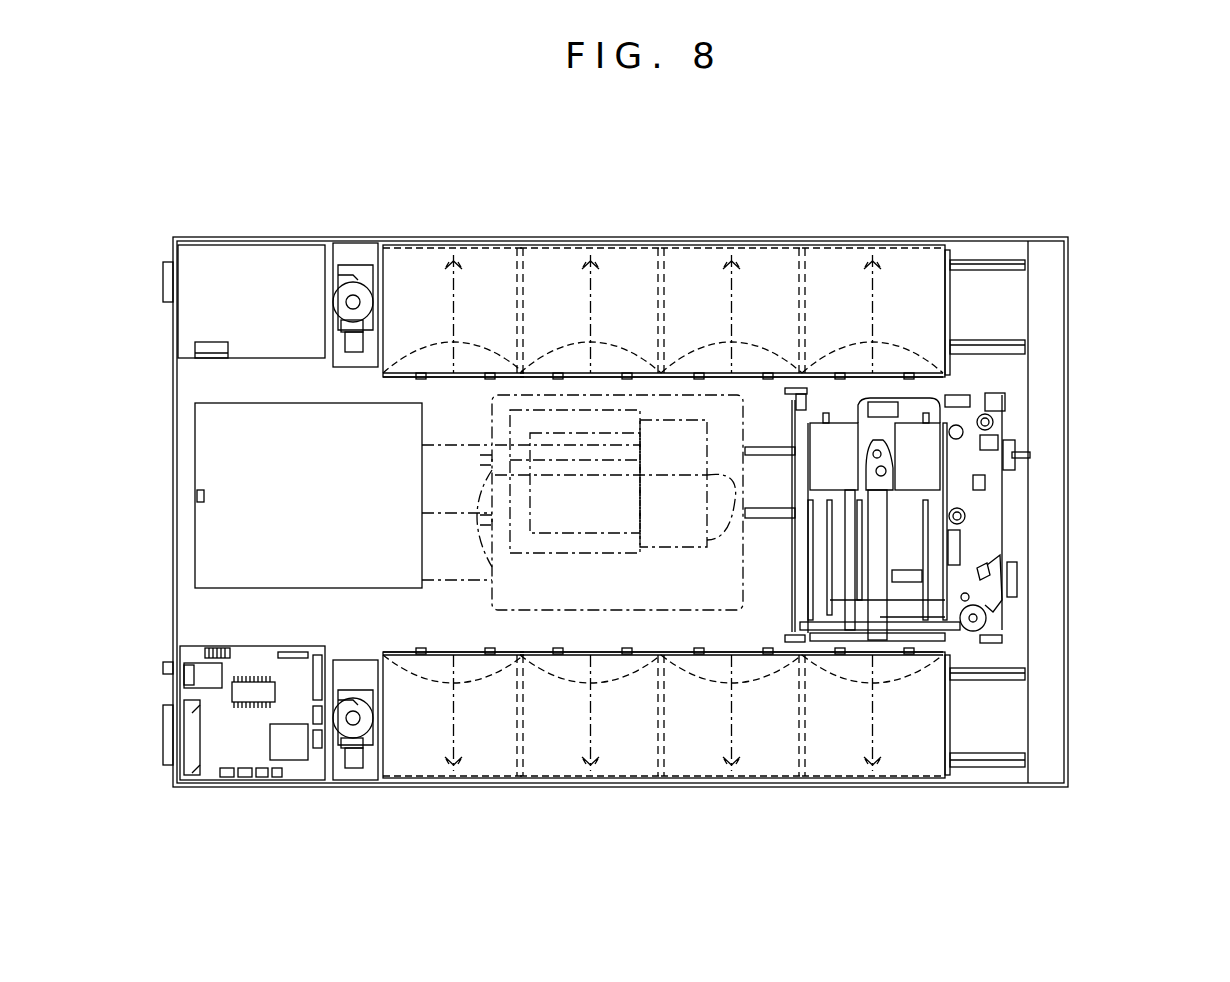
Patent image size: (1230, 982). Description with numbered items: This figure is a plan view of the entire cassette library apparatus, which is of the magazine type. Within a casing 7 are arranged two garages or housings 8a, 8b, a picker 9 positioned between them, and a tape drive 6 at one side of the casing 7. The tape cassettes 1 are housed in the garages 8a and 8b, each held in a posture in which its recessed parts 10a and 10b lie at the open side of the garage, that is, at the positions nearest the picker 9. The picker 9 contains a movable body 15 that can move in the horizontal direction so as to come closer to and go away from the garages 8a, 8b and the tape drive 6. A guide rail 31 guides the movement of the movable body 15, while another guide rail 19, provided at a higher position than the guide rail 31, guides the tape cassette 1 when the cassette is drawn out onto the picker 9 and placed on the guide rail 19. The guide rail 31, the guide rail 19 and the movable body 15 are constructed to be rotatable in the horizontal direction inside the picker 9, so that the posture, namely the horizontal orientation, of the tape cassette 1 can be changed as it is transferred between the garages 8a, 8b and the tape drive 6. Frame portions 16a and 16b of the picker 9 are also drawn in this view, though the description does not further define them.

The tape cassette 1 is at (843, 275).
The tape drive 6 is at (222, 533).
The casing 7 is at (1068, 400).
The garage 8a is at (950, 298).
The garage 8b is at (953, 730).
The picker 9 is at (612, 398).
The recessed part 10a is at (803, 310).
The recessed part 10b is at (950, 340).
The movable body 15 is at (913, 435).
The first frame 16a is at (935, 497).
The second frame 16b is at (805, 493).
The guide rail 19 is at (925, 527).
The guide rail 31 is at (875, 620).